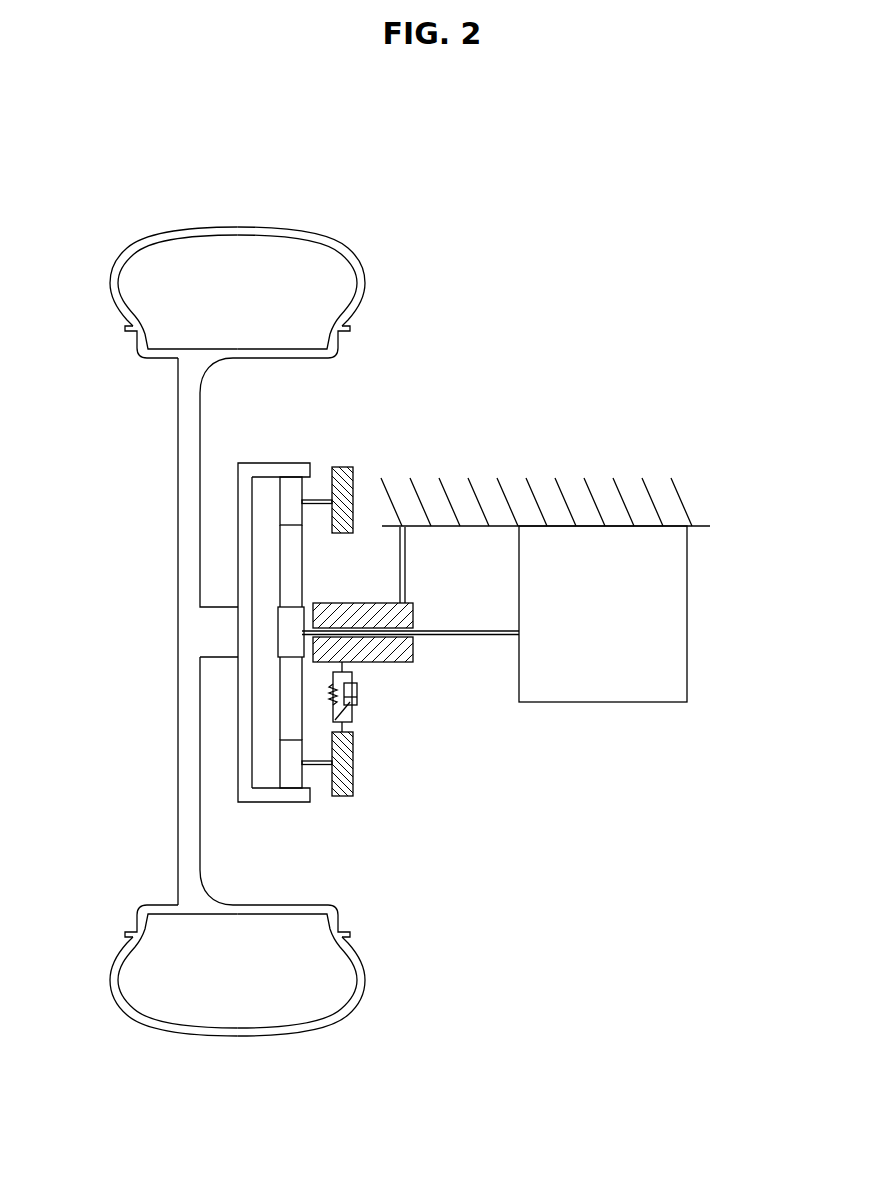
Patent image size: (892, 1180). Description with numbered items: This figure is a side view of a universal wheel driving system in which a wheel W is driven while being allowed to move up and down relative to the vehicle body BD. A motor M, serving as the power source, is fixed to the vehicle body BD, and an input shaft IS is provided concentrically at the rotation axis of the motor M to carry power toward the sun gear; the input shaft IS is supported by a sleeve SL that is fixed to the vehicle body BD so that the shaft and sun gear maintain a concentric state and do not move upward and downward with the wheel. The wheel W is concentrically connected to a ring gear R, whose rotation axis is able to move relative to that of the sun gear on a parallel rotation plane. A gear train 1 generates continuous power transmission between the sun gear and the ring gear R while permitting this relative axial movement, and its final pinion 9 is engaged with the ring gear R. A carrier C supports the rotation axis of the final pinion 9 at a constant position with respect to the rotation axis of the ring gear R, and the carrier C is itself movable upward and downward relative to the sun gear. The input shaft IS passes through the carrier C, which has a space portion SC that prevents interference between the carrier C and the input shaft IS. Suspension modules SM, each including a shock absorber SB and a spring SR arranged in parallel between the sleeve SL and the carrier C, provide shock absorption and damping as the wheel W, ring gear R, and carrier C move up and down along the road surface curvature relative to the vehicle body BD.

The wheel W is at (188, 236).
The ring gear R is at (292, 465).
The carrier C is at (342, 468).
The vehicle body BD is at (590, 488).
The input shaft IS is at (460, 628).
The motor M is at (673, 622).
The shock absorber SB is at (357, 697).
The spring SR is at (352, 724).
The suspension module SM is at (428, 730).
The sleeve SL is at (322, 619).
The space portion SC is at (342, 535).
The final pinion 9 is at (290, 503).
The gear train 1 is at (276, 550).